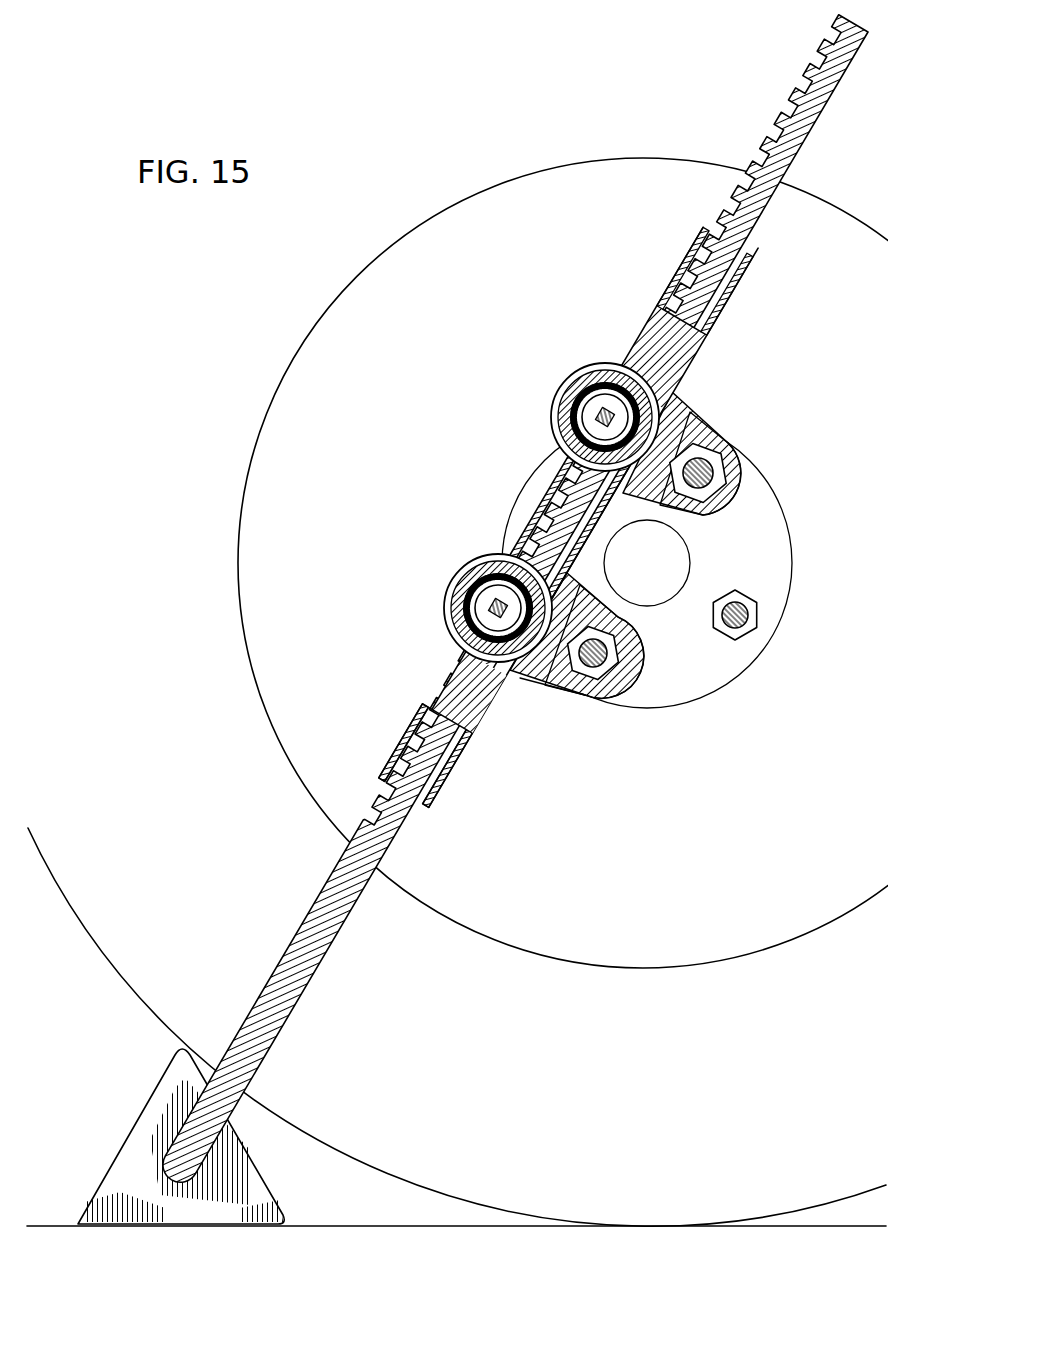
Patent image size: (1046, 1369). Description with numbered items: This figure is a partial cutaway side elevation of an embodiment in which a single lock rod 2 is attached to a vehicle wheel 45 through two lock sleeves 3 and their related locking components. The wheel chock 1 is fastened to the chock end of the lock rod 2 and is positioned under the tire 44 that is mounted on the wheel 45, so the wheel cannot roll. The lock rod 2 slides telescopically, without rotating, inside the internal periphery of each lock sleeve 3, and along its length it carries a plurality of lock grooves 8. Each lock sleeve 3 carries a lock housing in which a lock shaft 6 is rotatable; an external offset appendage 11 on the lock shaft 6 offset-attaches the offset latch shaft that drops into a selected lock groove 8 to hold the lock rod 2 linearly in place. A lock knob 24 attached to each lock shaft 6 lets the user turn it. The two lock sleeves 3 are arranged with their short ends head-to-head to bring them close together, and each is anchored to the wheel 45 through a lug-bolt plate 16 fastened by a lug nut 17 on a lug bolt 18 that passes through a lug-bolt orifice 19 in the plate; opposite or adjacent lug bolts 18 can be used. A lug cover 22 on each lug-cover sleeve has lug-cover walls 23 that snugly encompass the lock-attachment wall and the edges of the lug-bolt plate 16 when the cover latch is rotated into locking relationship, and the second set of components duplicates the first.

The wheel chock 1 is at (250, 1188).
The lock rod 2 is at (765, 222).
The lock sleeve 3 is at (648, 328).
The lock shaft 6 is at (560, 410).
The lock grooves 8 is at (553, 487).
The external offset appendage 11 is at (586, 447).
The lug-bolt plate 16 is at (713, 437).
The lug nut 17 is at (725, 455).
The lug bolt 18 is at (737, 473).
The lug-bolt orifice 19 is at (618, 692).
The lug cover 22 is at (690, 412).
The lug-cover walls 23 is at (757, 480).
The lock knob 24 is at (590, 377).
The tire 44 is at (139, 1000).
The wheel 45 is at (311, 800).